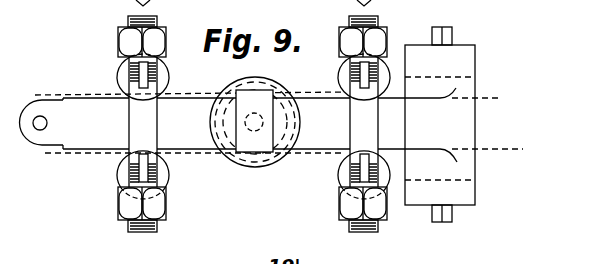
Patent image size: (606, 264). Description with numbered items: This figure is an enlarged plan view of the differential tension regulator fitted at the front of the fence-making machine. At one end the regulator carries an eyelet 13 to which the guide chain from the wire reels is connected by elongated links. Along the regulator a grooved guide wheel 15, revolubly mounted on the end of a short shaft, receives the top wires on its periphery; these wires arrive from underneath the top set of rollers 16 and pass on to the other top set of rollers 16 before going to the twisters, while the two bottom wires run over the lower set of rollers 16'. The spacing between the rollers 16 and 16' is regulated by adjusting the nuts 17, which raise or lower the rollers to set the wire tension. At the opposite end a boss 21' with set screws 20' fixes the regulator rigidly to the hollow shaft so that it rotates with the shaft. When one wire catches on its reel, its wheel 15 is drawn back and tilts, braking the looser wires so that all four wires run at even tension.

The eyelet 13 is at (50, 140).
The grooved guide wheel 15 is at (243, 162).
The top set of rollers 16 is at (253, 101).
The lower set of rollers 16' is at (253, 175).
The nuts 17 is at (167, 208).
The set screws 20' is at (479, 112).
The boss 21' is at (471, 125).